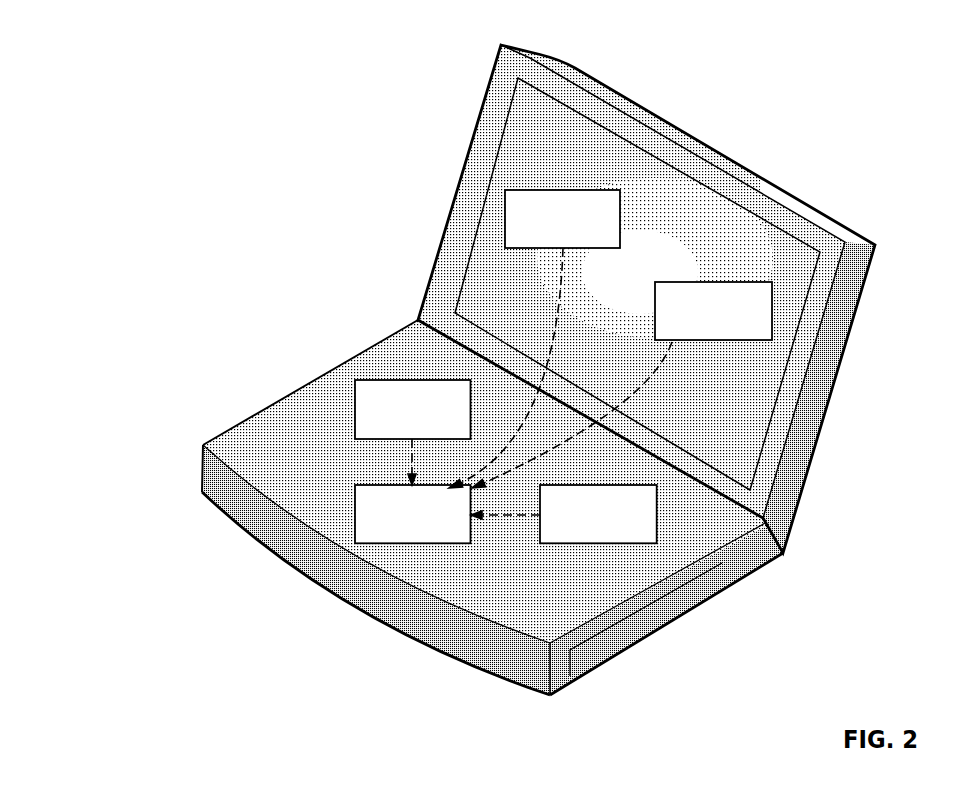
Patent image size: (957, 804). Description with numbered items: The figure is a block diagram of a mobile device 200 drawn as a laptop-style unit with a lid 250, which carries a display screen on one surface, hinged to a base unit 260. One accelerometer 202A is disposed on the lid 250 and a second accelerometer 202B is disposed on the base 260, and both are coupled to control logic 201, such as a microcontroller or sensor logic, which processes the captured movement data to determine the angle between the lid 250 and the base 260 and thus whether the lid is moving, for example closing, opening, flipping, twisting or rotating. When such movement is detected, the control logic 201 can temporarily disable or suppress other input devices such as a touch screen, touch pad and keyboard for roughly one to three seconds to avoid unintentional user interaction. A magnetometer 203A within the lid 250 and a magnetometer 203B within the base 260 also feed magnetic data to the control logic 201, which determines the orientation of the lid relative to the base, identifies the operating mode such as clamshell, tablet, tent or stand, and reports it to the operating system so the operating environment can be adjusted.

The mobile device 200 is at (538, 370).
The lid 250 is at (708, 149).
The base unit 260 is at (330, 578).
The accelerometer 202A is at (582, 240).
The magnetometer 203A is at (693, 332).
The accelerometer 202B is at (432, 430).
The control logic 201 is at (400, 534).
The magnetometer 203B is at (580, 534).